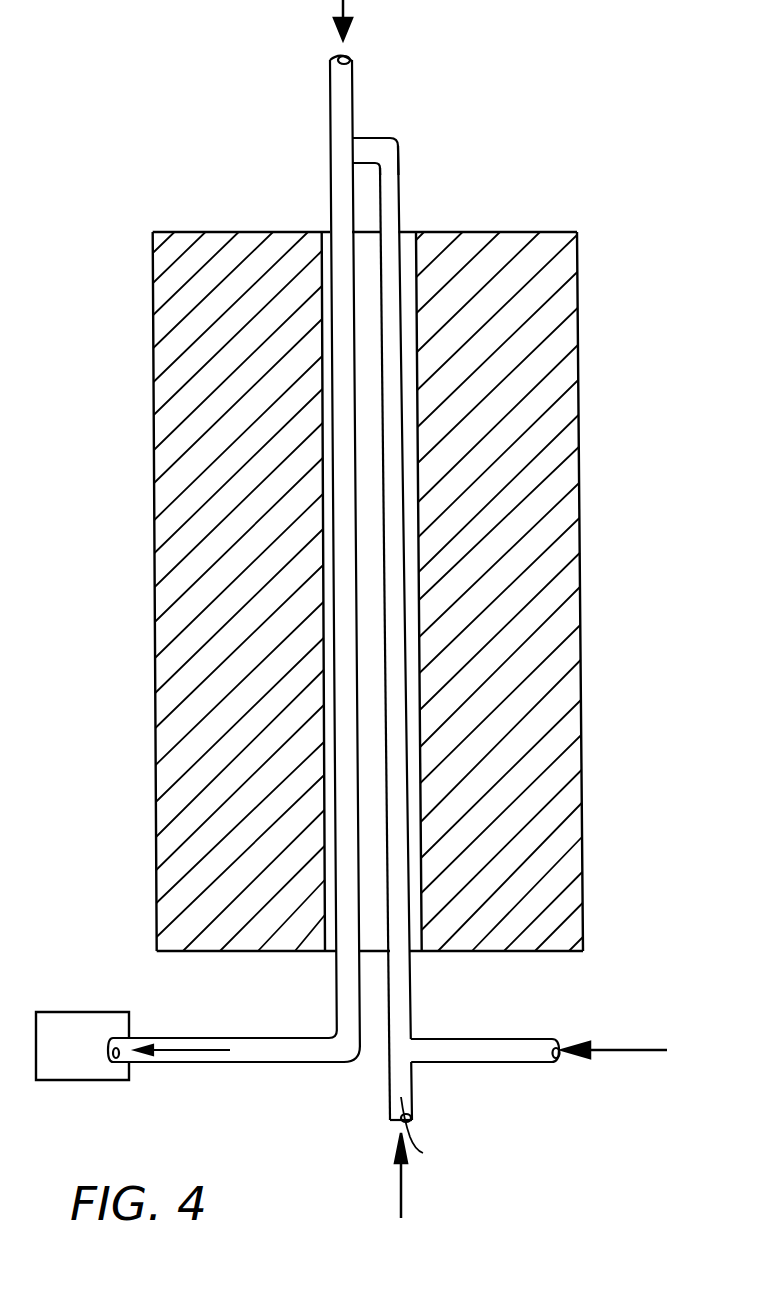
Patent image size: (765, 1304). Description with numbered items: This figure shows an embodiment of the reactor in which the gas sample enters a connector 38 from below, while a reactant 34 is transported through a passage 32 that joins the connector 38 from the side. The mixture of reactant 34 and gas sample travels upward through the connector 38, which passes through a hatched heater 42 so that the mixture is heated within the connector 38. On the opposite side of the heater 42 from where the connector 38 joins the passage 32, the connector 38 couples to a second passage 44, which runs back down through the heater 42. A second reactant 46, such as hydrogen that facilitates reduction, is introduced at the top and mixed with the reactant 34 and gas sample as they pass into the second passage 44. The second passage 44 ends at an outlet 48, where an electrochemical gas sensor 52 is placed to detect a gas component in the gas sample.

The passage 32 is at (533, 1063).
The reactant 34 is at (513, 1053).
The connector 38 is at (412, 991).
The heater 42 is at (583, 712).
The second passage 44 is at (330, 90).
The second reactant 46 is at (341, 118).
The outlet 48 is at (113, 1055).
The electrochemical gas sensor 52 is at (63, 1012).